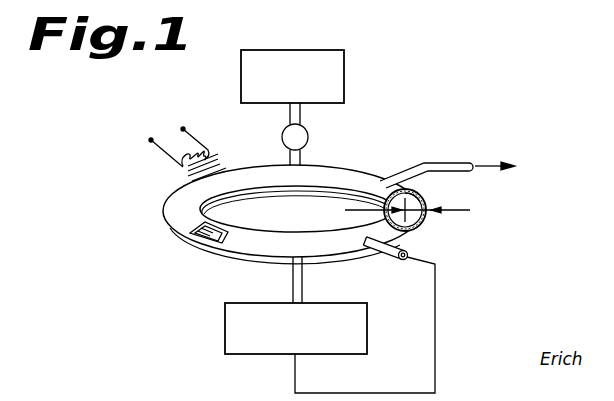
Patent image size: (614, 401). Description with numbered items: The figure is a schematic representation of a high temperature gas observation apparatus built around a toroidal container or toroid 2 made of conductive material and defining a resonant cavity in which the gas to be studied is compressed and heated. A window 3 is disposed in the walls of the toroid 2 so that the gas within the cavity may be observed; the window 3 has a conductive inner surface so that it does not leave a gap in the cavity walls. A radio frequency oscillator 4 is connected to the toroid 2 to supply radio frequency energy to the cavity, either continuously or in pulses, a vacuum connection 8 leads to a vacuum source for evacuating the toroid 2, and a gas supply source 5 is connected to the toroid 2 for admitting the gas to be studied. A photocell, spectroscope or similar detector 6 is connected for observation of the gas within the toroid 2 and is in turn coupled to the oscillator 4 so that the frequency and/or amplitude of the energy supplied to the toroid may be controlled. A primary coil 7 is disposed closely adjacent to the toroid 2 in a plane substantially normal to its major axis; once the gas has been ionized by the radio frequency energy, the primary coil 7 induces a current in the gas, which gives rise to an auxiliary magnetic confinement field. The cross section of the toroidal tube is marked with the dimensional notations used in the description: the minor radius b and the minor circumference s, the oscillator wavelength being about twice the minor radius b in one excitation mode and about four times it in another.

The toroidal container 2 is at (163, 207).
The window 3 is at (197, 240).
The radio frequency oscillator 4 is at (225, 330).
The gas supply source 5 is at (345, 88).
The detector 6 is at (408, 243).
The primary coil 7 is at (162, 158).
The vacuum connection 8 is at (421, 162).
The minor circumference s is at (417, 201).
The minor radius b is at (417, 210).